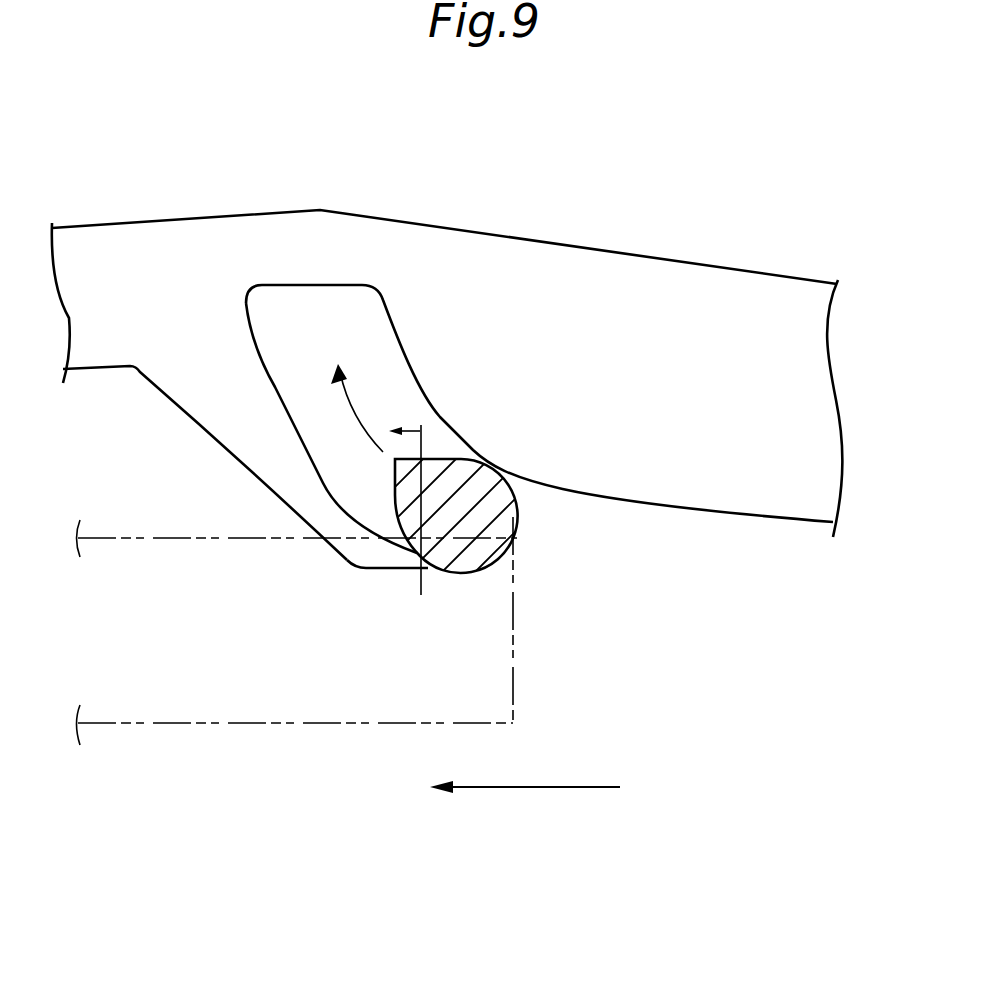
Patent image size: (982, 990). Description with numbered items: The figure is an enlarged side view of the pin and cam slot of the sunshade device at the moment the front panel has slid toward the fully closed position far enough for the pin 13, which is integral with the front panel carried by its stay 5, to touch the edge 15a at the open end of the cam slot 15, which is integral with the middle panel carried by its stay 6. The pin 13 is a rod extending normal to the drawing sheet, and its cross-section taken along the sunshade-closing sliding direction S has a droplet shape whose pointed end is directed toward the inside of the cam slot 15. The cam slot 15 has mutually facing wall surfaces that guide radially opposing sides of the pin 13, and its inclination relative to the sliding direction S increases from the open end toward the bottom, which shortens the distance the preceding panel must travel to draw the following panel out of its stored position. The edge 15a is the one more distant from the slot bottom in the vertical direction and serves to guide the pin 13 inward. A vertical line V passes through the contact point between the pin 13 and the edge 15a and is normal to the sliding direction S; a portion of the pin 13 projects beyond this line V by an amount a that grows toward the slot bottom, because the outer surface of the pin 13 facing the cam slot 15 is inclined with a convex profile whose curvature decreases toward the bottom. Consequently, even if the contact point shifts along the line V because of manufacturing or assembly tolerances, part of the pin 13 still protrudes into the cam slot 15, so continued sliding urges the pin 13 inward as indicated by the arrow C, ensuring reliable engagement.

The stay 6 is at (605, 250).
The cam slot 15 is at (257, 333).
The edge of the open end of the cam slot 15a is at (424, 571).
The pin 13 is at (520, 517).
The stay 5 is at (168, 723).
The arrow indicating urging direction C is at (357, 410).
The amount of projection a is at (405, 499).
The vertical line V is at (421, 440).
The sunshade-closing sliding direction S is at (543, 787).